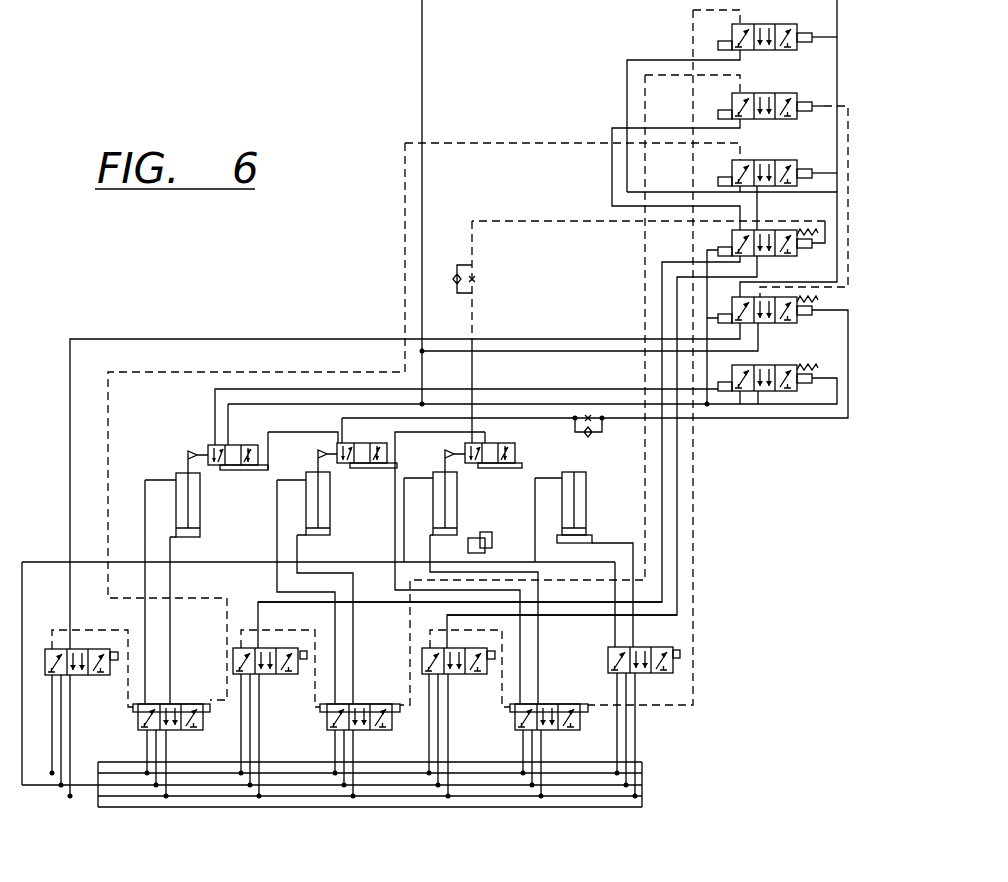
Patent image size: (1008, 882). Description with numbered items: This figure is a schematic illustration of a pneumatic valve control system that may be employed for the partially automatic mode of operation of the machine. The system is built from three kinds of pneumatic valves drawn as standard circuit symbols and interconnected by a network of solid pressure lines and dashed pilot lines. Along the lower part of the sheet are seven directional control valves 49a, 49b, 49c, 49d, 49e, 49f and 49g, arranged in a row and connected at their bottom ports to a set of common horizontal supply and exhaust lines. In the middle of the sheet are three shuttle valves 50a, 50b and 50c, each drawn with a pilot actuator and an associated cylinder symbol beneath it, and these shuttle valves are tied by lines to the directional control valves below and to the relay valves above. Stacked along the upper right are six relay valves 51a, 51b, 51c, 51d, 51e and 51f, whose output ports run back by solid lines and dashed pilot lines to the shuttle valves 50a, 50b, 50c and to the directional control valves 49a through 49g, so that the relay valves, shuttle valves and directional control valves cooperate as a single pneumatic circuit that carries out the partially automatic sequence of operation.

The directional control valve 49a is at (92, 676).
The directional control valve 49b is at (190, 732).
The directional control valve 49c is at (273, 675).
The directional control valve 49d is at (330, 732).
The directional control valve 49e is at (465, 675).
The directional control valve 49f is at (563, 732).
The directional control valve 49g is at (653, 674).
The shuttle valve 50a is at (260, 458).
The shuttle valve 50b is at (390, 458).
The shuttle valve 50c is at (513, 463).
The relay valve 51a is at (735, 30).
The relay valve 51b is at (735, 98).
The relay valve 51c is at (735, 165).
The relay valve 51d is at (735, 237).
The relay valve 51e is at (735, 305).
The relay valve 51f is at (735, 374).